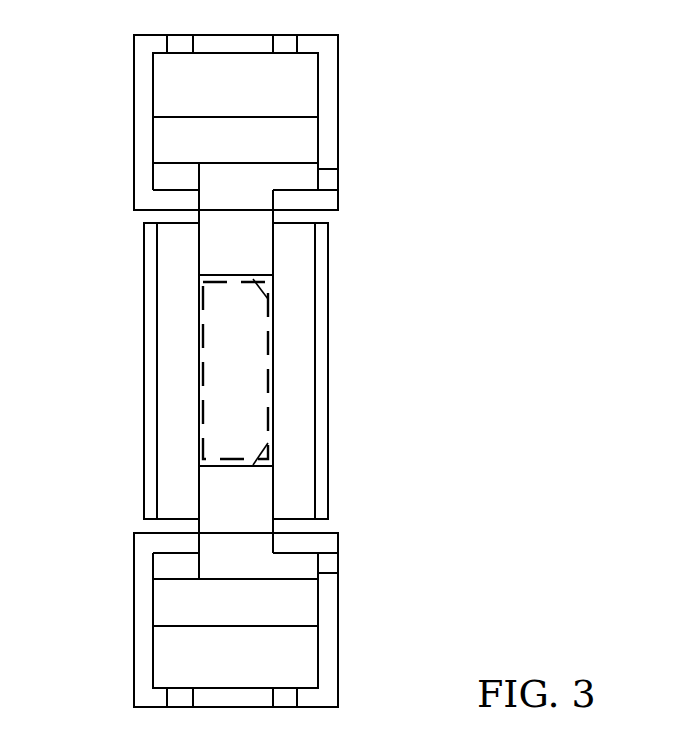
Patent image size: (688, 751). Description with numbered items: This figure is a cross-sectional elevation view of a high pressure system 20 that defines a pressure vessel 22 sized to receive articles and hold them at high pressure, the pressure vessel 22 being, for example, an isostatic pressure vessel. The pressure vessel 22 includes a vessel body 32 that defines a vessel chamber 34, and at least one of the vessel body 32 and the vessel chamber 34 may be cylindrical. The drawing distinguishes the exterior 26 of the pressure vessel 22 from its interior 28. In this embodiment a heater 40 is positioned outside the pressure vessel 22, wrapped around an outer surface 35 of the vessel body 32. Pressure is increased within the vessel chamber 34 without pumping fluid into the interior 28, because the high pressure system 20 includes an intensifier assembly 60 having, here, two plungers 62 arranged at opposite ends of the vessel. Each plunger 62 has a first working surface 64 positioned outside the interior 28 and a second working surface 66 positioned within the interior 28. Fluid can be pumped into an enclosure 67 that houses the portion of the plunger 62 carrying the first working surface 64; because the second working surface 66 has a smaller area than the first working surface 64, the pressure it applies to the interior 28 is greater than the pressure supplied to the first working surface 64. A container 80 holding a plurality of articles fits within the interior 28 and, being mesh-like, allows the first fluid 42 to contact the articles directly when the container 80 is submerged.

The high pressure system 20 is at (508, 88).
The pressure vessel 22 is at (335, 497).
The exterior 26 is at (125, 371).
The interior 28 is at (262, 350).
The vessel body 32 is at (172, 441).
The vessel chamber 34 is at (217, 348).
The outer surface 35 is at (157, 408).
The heater 40 is at (144, 497).
The first fluid 42 is at (250, 405).
The intensifier assembly 60 is at (253, 370).
The plunger 62 is at (158, 139).
The first working surface 64 is at (151, 117).
The second working surface 66 is at (268, 299).
The enclosure 67 is at (338, 83).
The container 80 is at (201, 327).